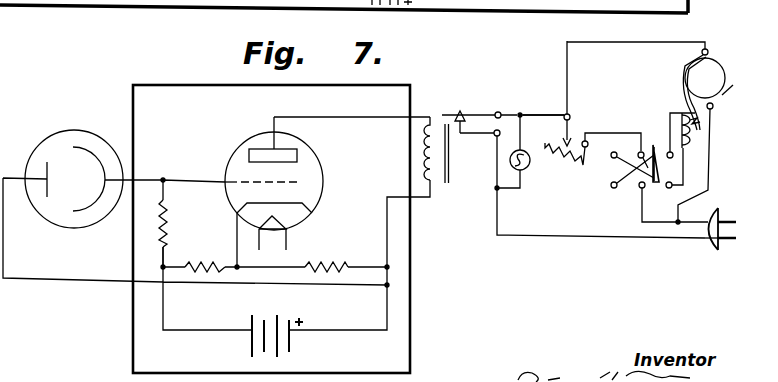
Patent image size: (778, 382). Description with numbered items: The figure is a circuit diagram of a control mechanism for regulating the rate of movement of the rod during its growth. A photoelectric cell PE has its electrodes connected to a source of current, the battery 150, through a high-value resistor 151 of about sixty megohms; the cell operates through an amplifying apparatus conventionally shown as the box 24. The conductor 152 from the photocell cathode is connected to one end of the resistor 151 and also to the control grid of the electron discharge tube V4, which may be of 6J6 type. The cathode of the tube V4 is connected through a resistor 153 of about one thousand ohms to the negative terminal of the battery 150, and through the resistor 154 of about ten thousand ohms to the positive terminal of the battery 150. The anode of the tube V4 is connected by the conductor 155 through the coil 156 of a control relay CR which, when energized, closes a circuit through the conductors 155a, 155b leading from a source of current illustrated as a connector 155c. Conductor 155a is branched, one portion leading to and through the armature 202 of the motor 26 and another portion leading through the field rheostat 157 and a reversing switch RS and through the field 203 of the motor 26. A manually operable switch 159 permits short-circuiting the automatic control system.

The amplifying apparatus 24 is at (147, 89).
The photoelectric cell PE is at (68, 131).
The conductor 152 is at (175, 179).
The high-value resistor 151 is at (155, 226).
The resistor 153 is at (200, 255).
The resistor 154 is at (327, 256).
The battery 150 is at (249, 332).
The electron discharge tube V4 is at (311, 158).
The conductor 155 is at (342, 121).
The coil 156 is at (424, 149).
The control relay CR is at (462, 108).
The conductor 155a is at (537, 100).
The manually operable switch 159 is at (510, 165).
The conductor 155b is at (517, 236).
The field rheostat 157 is at (577, 164).
The reversing switch RS is at (668, 124).
The armature 202 is at (692, 79).
The field 203 is at (683, 63).
The motor 26 is at (728, 36).
The connector 155c is at (707, 240).